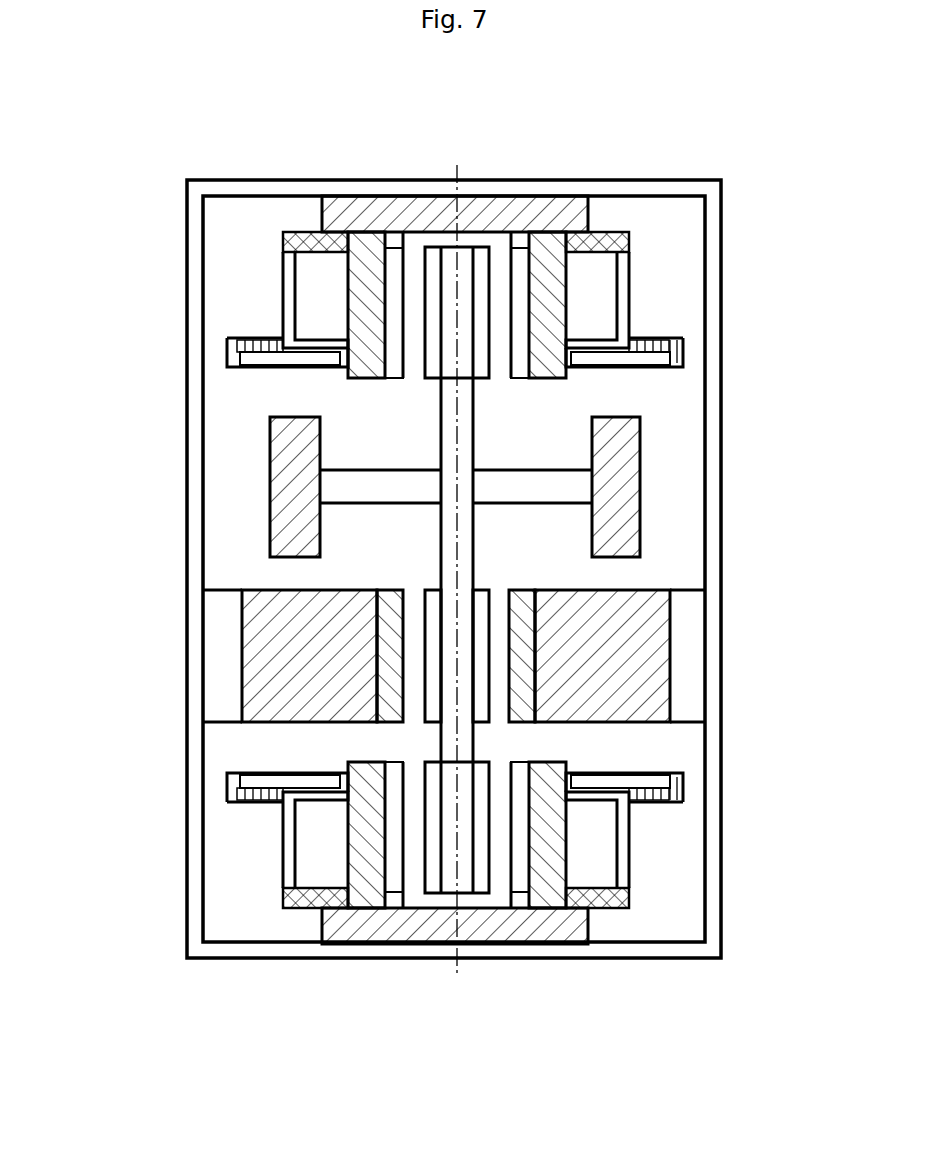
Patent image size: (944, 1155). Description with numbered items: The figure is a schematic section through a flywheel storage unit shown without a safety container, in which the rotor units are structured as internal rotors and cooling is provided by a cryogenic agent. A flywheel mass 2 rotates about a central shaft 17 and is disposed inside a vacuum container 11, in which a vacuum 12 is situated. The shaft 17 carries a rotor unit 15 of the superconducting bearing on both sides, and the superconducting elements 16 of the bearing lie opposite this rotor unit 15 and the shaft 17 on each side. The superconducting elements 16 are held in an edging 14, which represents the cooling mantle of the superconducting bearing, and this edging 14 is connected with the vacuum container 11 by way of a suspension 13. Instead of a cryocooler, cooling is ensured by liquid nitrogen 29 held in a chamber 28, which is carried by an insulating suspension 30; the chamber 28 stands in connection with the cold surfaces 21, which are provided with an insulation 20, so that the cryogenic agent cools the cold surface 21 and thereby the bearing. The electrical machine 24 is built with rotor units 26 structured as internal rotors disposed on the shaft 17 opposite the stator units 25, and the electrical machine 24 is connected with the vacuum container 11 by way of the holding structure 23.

The flywheel mass 2 is at (283, 548).
The vacuum container 11 is at (195, 207).
The vacuum 12 is at (262, 215).
The suspension of the superconducting bearing 13 is at (332, 210).
The edging and cooling mantle of the superconducting bearing 14 is at (547, 272).
The rotor unit of the bearing 15 is at (478, 265).
The superconducting elements of the bearing 16 is at (395, 262).
The shaft 17 is at (463, 569).
The insulation of the cold surface 20 is at (682, 340).
The cold surface 21 is at (650, 357).
The holding structure of the electrical machine 23 is at (680, 628).
The electrical machine 24 is at (600, 693).
The stator unit of the electrical machine 25 is at (375, 698).
The rotor unit of the electrical machine 26 is at (422, 633).
The chamber for liquid nitrogen 28 is at (288, 280).
The liquid nitrogen 29 is at (305, 315).
The insulating suspension of the chamber 30 is at (283, 237).